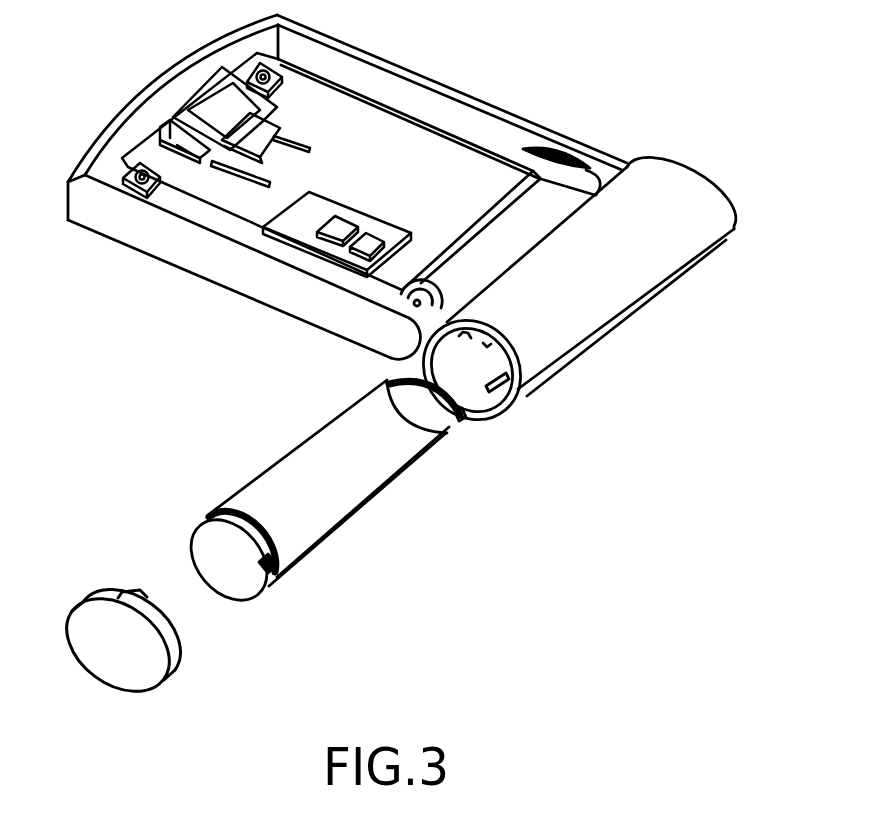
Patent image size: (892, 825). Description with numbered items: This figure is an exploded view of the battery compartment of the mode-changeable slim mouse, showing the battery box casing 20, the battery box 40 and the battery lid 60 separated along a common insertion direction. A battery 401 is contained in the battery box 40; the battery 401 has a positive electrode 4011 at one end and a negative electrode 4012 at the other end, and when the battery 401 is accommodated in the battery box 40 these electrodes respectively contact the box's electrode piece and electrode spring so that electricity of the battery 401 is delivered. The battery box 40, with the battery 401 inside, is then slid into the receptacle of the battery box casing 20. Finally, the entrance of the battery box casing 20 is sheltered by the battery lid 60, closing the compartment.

The battery box casing 20 is at (618, 277).
The battery box 40 is at (329, 503).
The battery 401 is at (355, 477).
The positive electrode 4011 is at (458, 421).
The negative electrode 4012 is at (286, 564).
The battery lid 60 is at (107, 663).